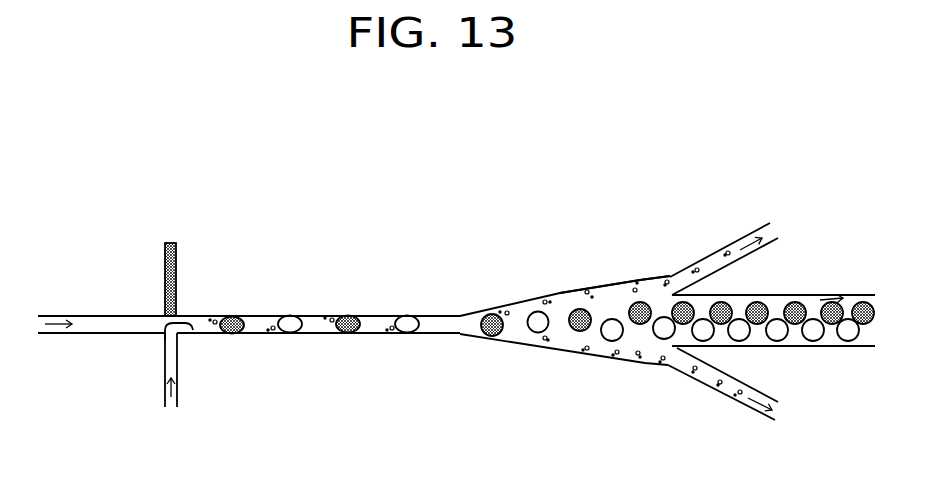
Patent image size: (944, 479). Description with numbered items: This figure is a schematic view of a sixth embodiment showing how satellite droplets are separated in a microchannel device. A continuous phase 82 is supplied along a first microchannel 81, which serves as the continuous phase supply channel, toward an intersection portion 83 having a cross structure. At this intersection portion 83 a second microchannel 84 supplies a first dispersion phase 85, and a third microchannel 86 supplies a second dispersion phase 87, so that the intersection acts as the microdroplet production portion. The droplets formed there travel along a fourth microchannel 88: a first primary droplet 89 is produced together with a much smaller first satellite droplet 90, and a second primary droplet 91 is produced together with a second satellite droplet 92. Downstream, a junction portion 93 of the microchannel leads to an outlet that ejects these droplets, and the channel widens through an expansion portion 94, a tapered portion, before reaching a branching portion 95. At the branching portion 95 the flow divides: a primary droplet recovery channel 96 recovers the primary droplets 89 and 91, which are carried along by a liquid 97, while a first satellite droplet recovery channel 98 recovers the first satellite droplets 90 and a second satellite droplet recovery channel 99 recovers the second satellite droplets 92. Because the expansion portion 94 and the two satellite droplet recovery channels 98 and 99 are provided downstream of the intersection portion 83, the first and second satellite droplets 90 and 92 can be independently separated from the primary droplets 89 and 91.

The first microchannel 81 is at (100, 316).
The continuous phase 82 is at (55, 325).
The intersection portion 83 is at (166, 325).
The second microchannel 84 is at (178, 363).
The first dispersion phase 85 is at (172, 393).
The third microchannel 86 is at (176, 280).
The second dispersion phase 87 is at (176, 258).
The fourth microchannel 88 is at (385, 315).
The first primary droplet 89 is at (291, 316).
The first satellite droplet 90 is at (272, 330).
The second primary droplet 91 is at (349, 316).
The second satellite droplet 92 is at (328, 325).
The junction portion 93 is at (457, 322).
The expansion portion 94 is at (632, 278).
The branching portion 95 is at (669, 320).
The primary droplet recovery channel 96 is at (793, 294).
The liquid carrying the primary droplets 97 is at (832, 298).
The first satellite droplet recovery channel 98 is at (710, 388).
The second satellite droplet recovery channel 99 is at (757, 231).